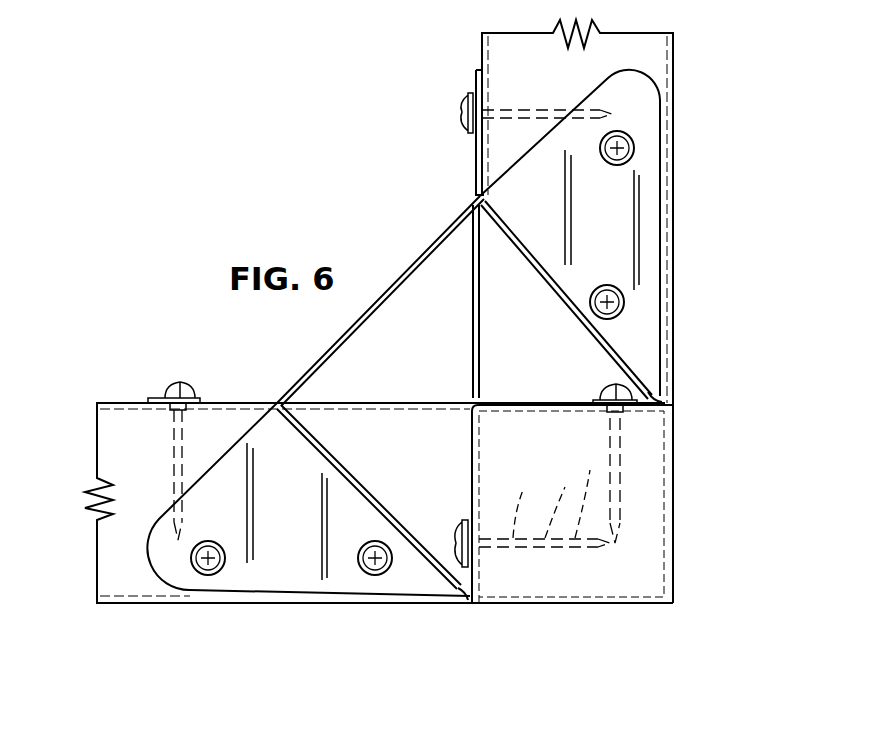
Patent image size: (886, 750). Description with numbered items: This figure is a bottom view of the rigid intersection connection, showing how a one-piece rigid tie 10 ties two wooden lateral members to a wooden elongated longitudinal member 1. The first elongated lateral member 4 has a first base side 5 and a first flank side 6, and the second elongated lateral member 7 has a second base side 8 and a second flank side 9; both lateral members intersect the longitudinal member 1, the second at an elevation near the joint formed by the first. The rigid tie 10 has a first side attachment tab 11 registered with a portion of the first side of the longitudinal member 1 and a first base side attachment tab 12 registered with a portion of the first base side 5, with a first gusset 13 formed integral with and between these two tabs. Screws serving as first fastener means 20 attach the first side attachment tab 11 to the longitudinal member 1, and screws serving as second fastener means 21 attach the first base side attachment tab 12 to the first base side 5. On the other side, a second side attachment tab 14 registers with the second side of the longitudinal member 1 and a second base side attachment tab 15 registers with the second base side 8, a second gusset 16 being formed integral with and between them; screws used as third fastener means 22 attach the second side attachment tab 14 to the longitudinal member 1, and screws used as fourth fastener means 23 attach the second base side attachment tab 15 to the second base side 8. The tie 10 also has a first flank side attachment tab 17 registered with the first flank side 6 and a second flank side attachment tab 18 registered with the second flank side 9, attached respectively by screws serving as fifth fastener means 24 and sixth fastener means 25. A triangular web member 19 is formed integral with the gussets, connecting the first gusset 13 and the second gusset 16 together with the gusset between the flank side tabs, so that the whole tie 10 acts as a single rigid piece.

The elongated longitudinal member 1 is at (533, 608).
The first elongated lateral member 4 is at (679, 57).
The first base side 5 is at (516, 88).
The first flank side 6 is at (482, 45).
The second elongated lateral member 7 is at (90, 558).
The second base side 8 is at (124, 453).
The second flank side 9 is at (118, 402).
The one-piece rigid tie 10 is at (430, 217).
The first side attachment tab 11 is at (665, 401).
The first base side attachment tab 12 is at (658, 118).
The first gusset 13 is at (590, 375).
The second side attachment tab 14 is at (466, 602).
The second base side attachment tab 15 is at (193, 591).
The second gusset 16 is at (420, 518).
The first flank side attachment tab 17 is at (477, 77).
The second flank side attachment tab 18 is at (240, 400).
The triangular web member 19 is at (392, 302).
The first fastener means 20 is at (610, 449).
The second fastener means 21 is at (605, 164).
The third fastener means 22 is at (549, 501).
The fourth fastener means 23 is at (208, 541).
The fifth fastener means 24 is at (465, 122).
The sixth fastener means 25 is at (198, 385).